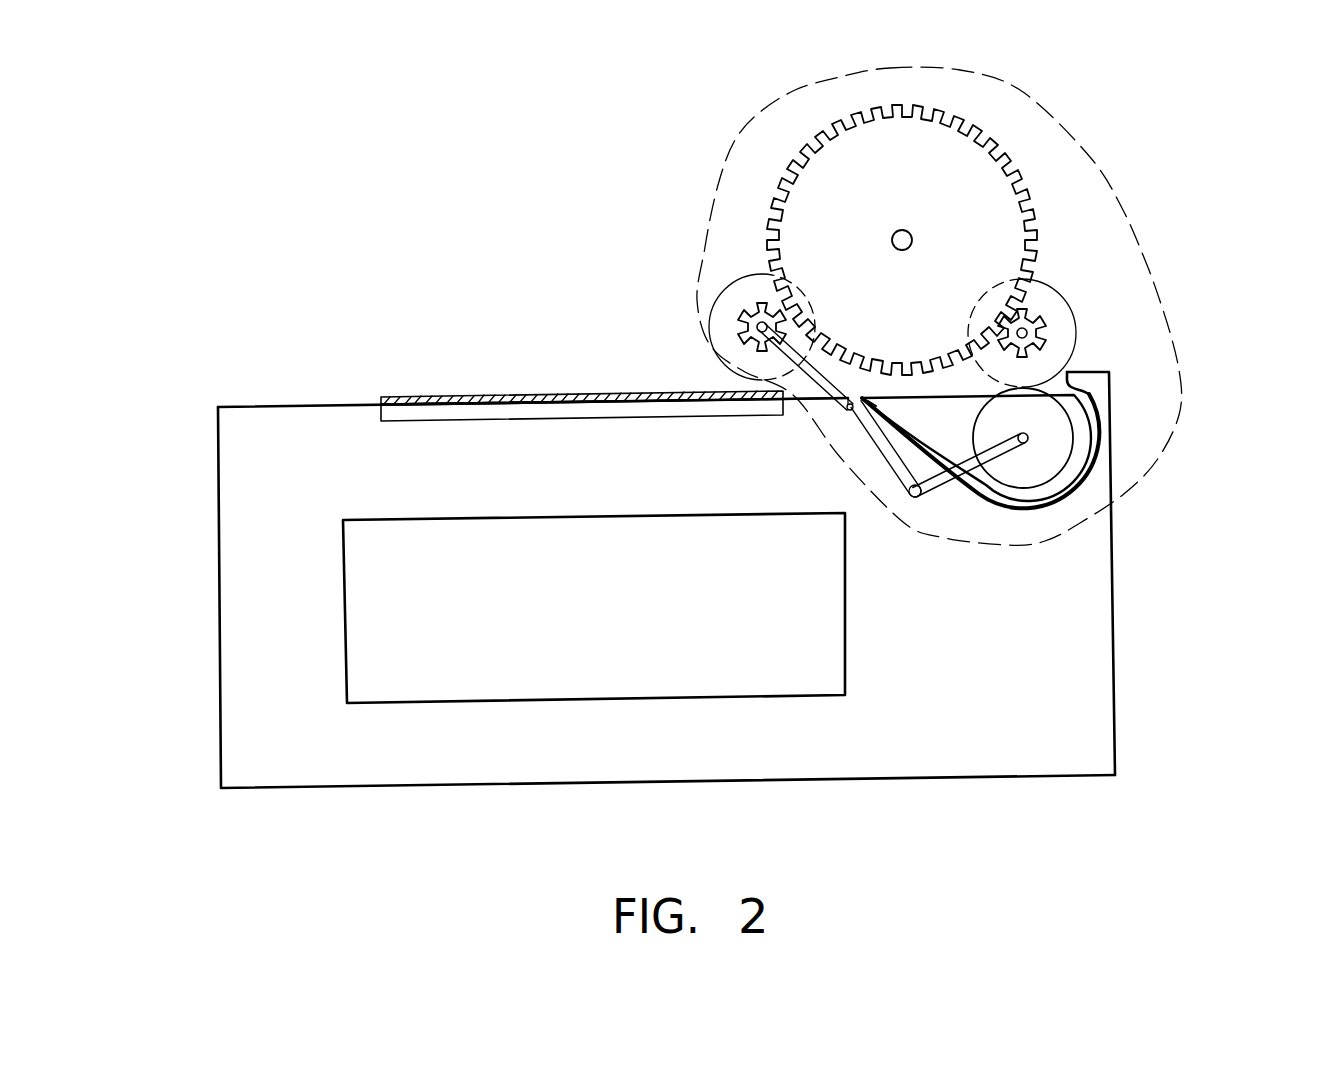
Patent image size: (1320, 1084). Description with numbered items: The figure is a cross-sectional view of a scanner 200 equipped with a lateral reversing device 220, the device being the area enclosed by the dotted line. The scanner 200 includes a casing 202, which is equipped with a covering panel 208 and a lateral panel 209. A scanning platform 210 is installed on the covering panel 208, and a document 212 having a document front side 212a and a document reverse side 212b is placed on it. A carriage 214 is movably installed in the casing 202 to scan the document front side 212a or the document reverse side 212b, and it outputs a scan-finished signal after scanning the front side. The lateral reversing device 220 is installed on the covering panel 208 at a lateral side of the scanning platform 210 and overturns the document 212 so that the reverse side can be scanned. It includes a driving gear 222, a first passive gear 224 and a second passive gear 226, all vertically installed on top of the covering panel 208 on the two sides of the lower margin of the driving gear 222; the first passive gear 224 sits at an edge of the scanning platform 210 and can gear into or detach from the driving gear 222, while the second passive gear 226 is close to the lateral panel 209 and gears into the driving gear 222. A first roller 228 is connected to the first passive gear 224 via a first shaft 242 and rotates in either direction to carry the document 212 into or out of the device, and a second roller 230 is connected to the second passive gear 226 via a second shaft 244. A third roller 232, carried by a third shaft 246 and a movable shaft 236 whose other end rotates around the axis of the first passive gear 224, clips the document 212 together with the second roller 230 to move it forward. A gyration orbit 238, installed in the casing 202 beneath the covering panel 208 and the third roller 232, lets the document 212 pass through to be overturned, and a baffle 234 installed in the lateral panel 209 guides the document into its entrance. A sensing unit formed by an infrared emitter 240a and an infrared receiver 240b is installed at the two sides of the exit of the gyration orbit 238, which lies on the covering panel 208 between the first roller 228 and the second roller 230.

The scanner 200 is at (640, 529).
The casing 202 is at (219, 573).
The covering panel 208 is at (247, 407).
The lateral panel 209 is at (1120, 706).
The scanning platform 210 is at (380, 407).
The document 212 is at (564, 391).
The document front side 212a is at (497, 418).
The document reverse side 212b is at (517, 395).
The carriage 214 is at (363, 637).
The lateral reversing device 220 is at (1096, 158).
The driving gear 222 is at (824, 172).
The first passive gear 224 is at (730, 307).
The second passive gear 226 is at (1033, 323).
The first roller 228 is at (758, 300).
The second roller 230 is at (1062, 328).
The third roller 232 is at (1047, 472).
The baffle 234 is at (1097, 387).
The movable shaft 236 is at (933, 490).
The gyration orbit 238 is at (1047, 510).
The infrared emitter 240a is at (826, 438).
The infrared receiver 240b is at (845, 412).
The first shaft 242 is at (743, 333).
The second shaft 244 is at (1040, 346).
The third shaft 246 is at (1030, 442).